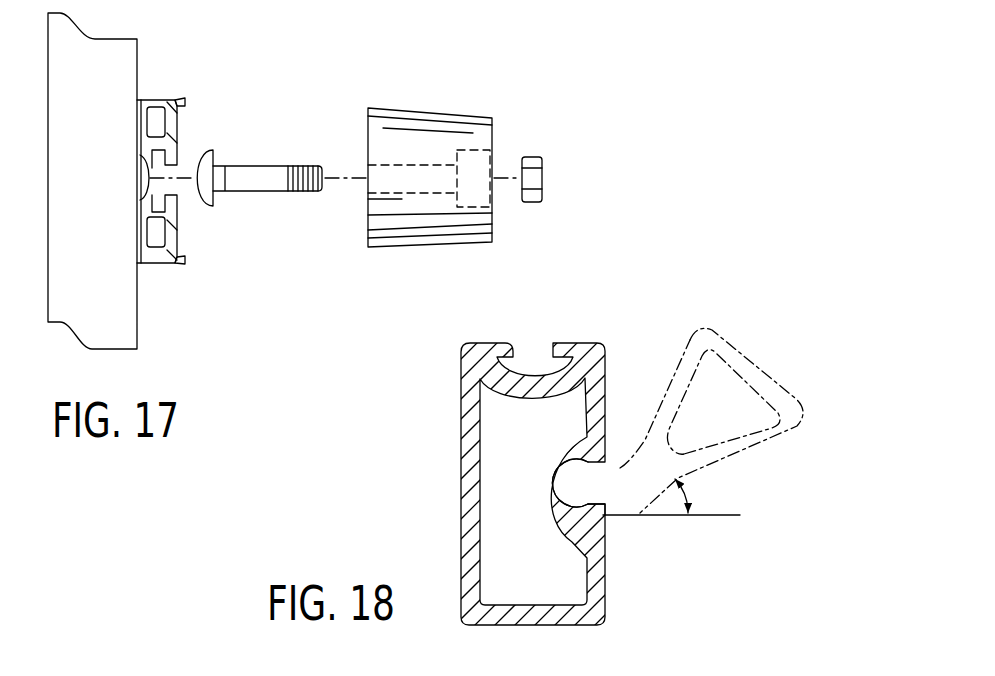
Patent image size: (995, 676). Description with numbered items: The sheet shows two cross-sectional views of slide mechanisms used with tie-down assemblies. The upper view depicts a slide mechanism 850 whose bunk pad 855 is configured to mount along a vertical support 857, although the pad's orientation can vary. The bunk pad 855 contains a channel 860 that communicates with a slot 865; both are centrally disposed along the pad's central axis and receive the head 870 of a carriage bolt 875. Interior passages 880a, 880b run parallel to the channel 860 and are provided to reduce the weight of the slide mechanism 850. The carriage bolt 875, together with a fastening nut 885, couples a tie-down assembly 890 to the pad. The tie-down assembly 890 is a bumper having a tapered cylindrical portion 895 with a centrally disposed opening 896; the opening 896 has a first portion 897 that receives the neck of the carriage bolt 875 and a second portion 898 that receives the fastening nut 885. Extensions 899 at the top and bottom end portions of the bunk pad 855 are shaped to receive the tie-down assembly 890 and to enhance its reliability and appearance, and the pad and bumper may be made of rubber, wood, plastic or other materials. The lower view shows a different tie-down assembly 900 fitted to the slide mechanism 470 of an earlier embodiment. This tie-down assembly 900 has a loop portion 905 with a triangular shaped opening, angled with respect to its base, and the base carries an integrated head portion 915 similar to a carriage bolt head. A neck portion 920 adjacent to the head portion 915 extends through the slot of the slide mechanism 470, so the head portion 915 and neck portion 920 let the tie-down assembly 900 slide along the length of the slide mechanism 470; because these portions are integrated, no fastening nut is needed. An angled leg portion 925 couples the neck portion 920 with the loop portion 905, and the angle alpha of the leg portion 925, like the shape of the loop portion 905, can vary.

In FIG. 18, the slide mechanism 470 is at (427, 458).
In FIG. 17, the slide mechanism 850 is at (149, 180).
In FIG. 17, the bunk pad 855 is at (166, 99).
In FIG. 17, the vertical support 857 is at (112, 130).
In FIG. 17, the channel 860 is at (142, 196).
In FIG. 17, the slot 865 is at (256, 173).
In FIG. 17, the head 870 is at (203, 190).
In FIG. 17, the carriage bolt 875 is at (253, 172).
In FIG. 17, the interior passage 880a is at (150, 118).
In FIG. 17, the interior passage 880b is at (154, 236).
In FIG. 17, the fastening nut 885 is at (542, 180).
In FIG. 17, the tie-down assembly 890 is at (432, 170).
In FIG. 17, the tapered cylindrical portion 895 is at (395, 249).
In FIG. 17, the centrally disposed opening 896 is at (366, 172).
In FIG. 17, the first portion 897 is at (410, 182).
In FIG. 17, the second portion 898 is at (482, 190).
In FIG. 17, the extensions 899 is at (186, 100).
In FIG. 18, the tie-down assembly 900 is at (706, 393).
In FIG. 18, the loop portion 905 is at (782, 456).
In FIG. 18, the head portion 915 is at (588, 486).
In FIG. 18, the neck portion 920 is at (598, 516).
In FIG. 18, the angled leg portion 925 is at (623, 472).